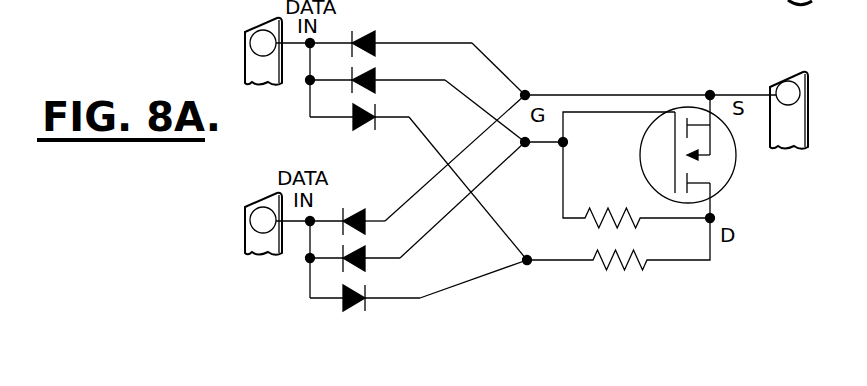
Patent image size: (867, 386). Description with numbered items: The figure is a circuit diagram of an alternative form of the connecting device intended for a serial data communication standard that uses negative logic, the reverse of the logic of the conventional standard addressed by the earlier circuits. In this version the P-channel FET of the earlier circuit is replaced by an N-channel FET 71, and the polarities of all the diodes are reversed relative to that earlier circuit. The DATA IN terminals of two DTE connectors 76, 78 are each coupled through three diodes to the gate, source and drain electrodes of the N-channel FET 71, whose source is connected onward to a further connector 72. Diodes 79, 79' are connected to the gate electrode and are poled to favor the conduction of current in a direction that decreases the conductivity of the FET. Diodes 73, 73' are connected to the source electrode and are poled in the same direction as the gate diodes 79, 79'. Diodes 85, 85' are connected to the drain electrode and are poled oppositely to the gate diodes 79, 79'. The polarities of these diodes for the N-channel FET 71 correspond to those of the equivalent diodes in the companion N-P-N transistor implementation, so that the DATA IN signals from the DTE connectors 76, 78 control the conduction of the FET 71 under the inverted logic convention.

The N-channel FET 71 is at (734, 172).
The source output connector 72 is at (785, 74).
The diode 73 is at (391, 28).
The diode 73' is at (347, 204).
The DTE connector 76 is at (245, 65).
The DTE connector 78 is at (243, 235).
The diode 79 is at (377, 72).
The diode 79' is at (367, 245).
The diode 85 is at (359, 131).
The diode 85' is at (373, 287).